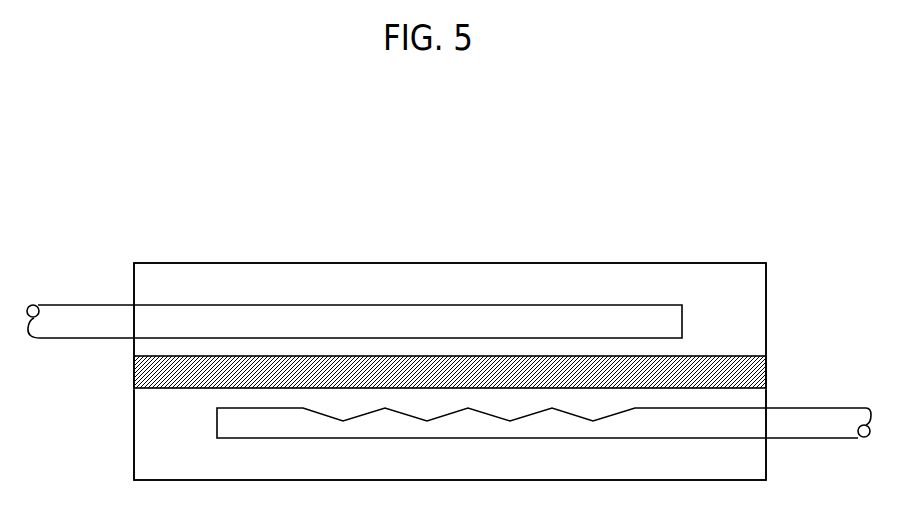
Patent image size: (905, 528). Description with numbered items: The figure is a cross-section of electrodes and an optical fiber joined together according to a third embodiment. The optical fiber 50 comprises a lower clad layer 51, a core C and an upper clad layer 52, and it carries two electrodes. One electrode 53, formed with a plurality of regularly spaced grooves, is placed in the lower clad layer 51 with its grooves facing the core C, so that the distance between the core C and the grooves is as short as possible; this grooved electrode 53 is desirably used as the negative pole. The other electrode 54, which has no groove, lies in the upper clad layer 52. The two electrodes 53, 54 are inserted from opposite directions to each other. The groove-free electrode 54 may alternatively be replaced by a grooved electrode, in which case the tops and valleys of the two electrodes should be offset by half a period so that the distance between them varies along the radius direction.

The optical fiber 50 is at (743, 245).
The lower clad layer 51 is at (140, 451).
The upper clad layer 52 is at (758, 296).
The electrode with grooves 53 is at (820, 412).
The electrode without grooves 54 is at (74, 312).
The core C is at (138, 373).